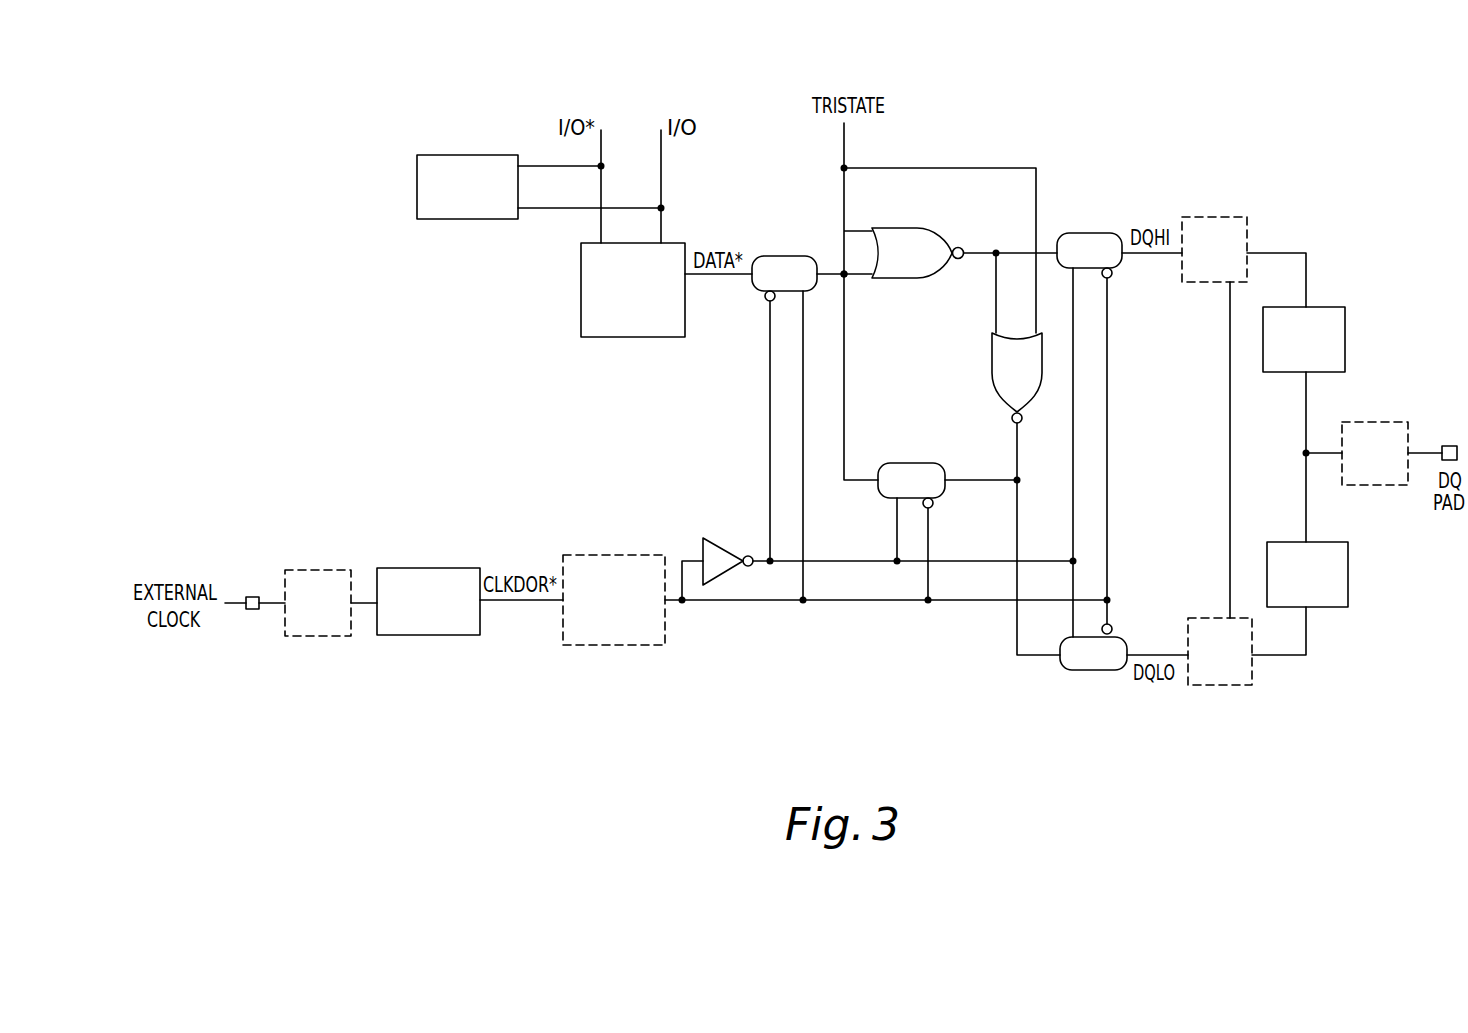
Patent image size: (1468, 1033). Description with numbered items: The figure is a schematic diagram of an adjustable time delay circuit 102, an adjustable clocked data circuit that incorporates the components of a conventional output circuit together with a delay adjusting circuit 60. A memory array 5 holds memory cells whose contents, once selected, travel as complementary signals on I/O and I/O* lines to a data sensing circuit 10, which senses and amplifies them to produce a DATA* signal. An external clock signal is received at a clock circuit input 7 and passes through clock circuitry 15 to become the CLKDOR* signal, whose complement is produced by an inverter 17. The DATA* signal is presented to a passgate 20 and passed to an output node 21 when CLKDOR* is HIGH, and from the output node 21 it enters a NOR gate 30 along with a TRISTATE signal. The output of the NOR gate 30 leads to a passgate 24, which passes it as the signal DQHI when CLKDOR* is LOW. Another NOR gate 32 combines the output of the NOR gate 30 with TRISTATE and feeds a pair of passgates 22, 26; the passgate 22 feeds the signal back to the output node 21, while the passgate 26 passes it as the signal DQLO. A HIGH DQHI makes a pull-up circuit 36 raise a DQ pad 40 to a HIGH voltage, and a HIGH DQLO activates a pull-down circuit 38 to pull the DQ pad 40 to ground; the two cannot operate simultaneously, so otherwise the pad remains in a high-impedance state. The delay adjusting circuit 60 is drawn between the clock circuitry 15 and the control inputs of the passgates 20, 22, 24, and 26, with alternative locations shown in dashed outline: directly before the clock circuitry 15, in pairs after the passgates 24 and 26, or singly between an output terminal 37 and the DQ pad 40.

The memory array 5 is at (486, 219).
The clock circuit input 7 is at (252, 609).
The data sensing circuit 10 is at (581, 298).
The clock circuitry 15 is at (430, 635).
The inverter 17 is at (748, 528).
The passgate 20 is at (793, 252).
The output node 21 is at (846, 276).
The passgate 22 is at (905, 463).
The passgate 24 is at (1090, 233).
The passgate 26 is at (1075, 670).
The NOR gate 30 is at (895, 280).
The NOR gate 32 is at (992, 370).
The pull-up circuit 36 is at (1287, 372).
The output terminal 37 is at (1302, 456).
The pull-down circuit 38 is at (1348, 598).
The DQ pad 40 is at (1449, 446).
The delay adjusting circuit 60 is at (325, 636).
The adjustable time delay circuit 102 is at (835, 648).